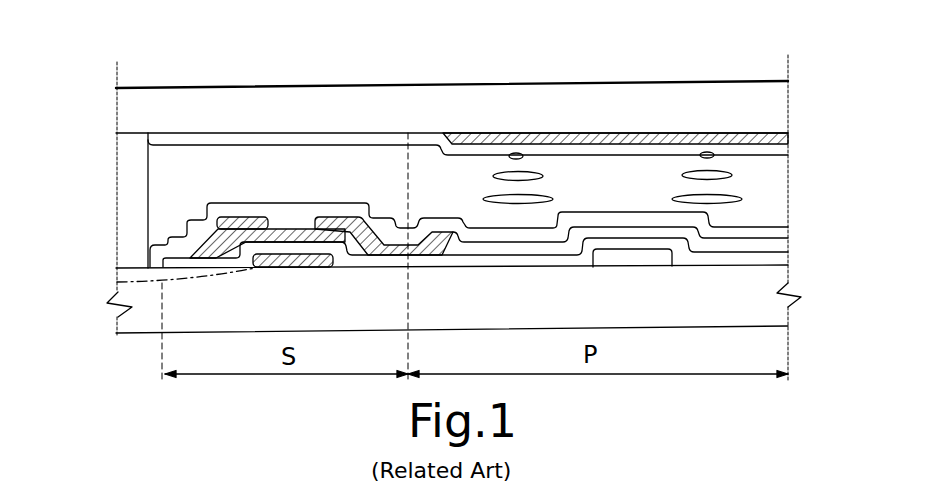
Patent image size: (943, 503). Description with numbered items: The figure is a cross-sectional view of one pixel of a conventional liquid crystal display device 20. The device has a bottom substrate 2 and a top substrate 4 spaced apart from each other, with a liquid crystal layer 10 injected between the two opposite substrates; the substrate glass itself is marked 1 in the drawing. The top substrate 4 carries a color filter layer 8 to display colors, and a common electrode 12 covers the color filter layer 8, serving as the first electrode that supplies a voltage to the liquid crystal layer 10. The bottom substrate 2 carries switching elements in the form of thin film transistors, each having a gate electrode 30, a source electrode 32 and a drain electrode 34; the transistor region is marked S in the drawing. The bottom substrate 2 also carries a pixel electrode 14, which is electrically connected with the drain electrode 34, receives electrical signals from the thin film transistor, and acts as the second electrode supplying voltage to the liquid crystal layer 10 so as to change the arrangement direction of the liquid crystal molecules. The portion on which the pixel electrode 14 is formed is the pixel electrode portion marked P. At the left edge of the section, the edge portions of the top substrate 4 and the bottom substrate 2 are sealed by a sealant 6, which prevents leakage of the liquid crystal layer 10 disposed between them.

The substrate 1 is at (483, 107).
The bottom substrate 2 is at (800, 226).
The top substrate 4 is at (800, 82).
The sealant 6 is at (122, 202).
The color filter layer 8 is at (653, 130).
The liquid crystal layer 10 is at (800, 153).
The common electrode 12 is at (760, 130).
The pixel electrode 14 is at (790, 241).
The liquid crystal display device 20 is at (278, 72).
The gate electrode 30 is at (117, 283).
The source electrode 32 is at (243, 218).
The drain electrode 34 is at (356, 217).